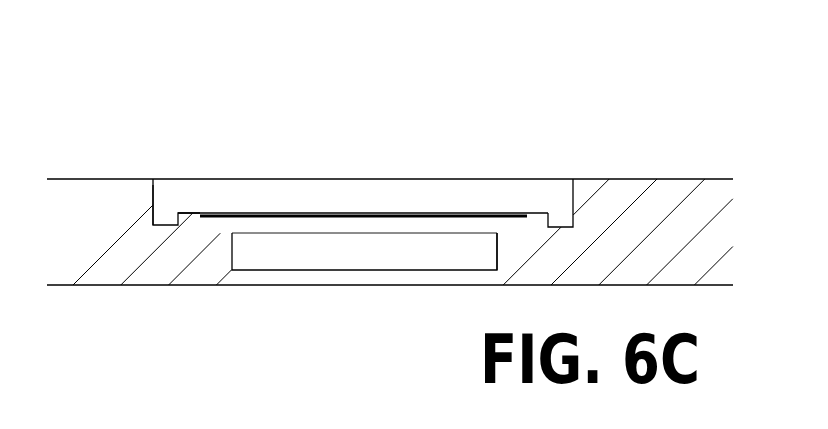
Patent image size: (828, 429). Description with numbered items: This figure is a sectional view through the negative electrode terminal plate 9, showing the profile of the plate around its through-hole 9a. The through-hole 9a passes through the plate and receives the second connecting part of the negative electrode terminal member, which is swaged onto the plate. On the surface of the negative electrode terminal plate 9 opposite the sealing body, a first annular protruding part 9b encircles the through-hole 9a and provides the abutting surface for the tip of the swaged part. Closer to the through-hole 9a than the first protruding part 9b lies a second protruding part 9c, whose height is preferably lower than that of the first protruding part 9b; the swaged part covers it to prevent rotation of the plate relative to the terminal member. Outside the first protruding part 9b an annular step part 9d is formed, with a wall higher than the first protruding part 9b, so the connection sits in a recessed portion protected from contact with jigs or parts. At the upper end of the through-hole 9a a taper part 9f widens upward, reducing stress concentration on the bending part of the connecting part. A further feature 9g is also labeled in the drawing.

The negative electrode terminal plate 9 is at (163, 255).
The through-hole 9a is at (368, 267).
The first annular protruding part 9b is at (548, 213).
The second protruding part 9c is at (497, 233).
The annular step part 9d is at (160, 173).
The taper part 9f is at (214, 220).
The step wall 9g is at (153, 202).